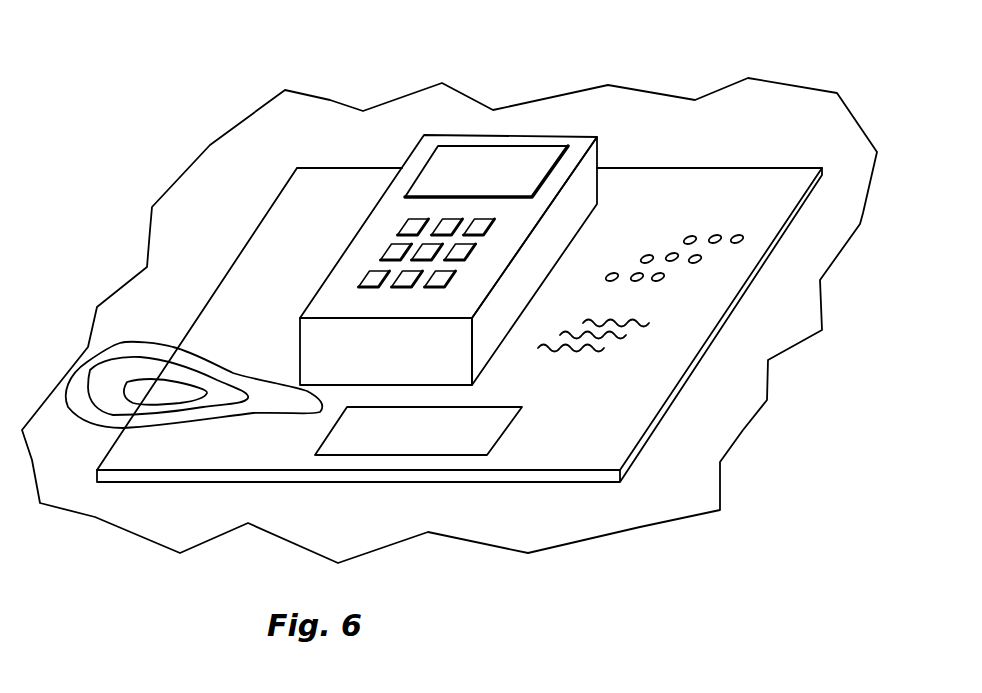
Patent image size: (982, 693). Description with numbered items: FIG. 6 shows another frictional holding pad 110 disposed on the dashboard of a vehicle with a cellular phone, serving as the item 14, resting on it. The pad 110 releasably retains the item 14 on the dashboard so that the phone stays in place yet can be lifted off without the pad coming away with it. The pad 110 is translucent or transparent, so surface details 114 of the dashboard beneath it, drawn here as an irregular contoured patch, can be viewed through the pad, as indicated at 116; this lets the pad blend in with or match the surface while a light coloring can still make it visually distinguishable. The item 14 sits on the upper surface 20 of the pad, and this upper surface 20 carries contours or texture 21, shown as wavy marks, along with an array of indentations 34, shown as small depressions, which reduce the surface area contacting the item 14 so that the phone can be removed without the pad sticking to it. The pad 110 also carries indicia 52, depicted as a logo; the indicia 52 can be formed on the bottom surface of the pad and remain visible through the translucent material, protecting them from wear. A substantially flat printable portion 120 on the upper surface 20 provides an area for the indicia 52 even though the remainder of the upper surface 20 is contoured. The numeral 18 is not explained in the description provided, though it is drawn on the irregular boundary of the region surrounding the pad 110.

The item 14 is at (530, 113).
The surface region 18 is at (180, 527).
The upper surface 20 is at (587, 416).
The texture 21 is at (632, 338).
The indentations 34 is at (697, 265).
The indicia 52 is at (418, 450).
The frictional holding pad 110 is at (575, 493).
The surface details 114 is at (120, 343).
The visible surface details through pad 116 is at (173, 444).
The printable portion 120 is at (467, 443).